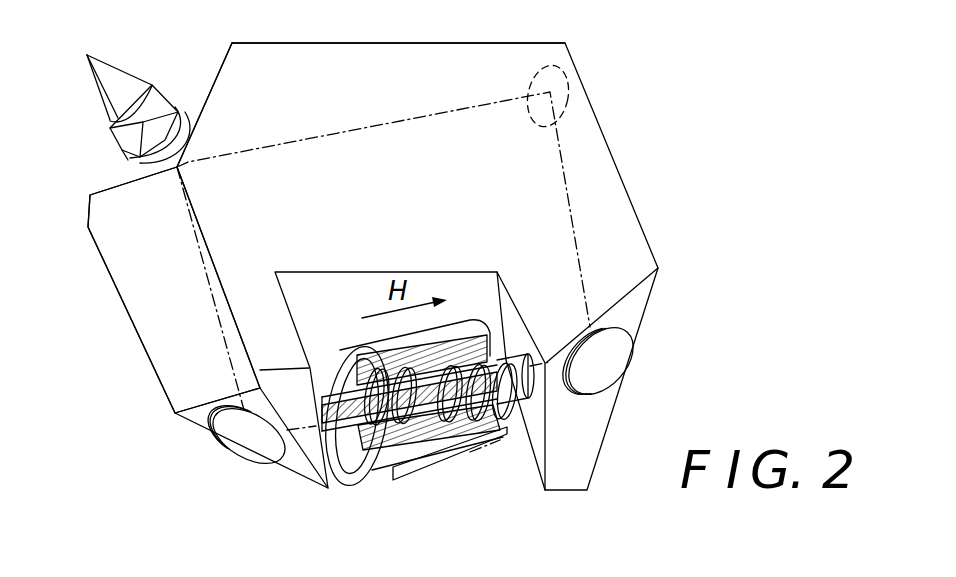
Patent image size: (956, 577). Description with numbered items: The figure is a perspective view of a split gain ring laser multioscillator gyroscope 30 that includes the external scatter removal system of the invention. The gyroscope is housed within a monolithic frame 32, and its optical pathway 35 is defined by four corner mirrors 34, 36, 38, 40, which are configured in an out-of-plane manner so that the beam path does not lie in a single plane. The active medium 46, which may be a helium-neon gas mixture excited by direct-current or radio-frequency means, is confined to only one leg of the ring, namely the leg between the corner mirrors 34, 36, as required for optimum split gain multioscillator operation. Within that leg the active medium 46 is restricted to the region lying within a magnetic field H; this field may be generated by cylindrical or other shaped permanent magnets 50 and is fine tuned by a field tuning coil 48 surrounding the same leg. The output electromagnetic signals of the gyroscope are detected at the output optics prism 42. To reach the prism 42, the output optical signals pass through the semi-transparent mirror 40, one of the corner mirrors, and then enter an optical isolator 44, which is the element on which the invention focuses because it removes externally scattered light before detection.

The split gain ring laser multioscillator gyroscope 30 is at (658, 190).
The monolithic frame 32 is at (145, 325).
The corner mirror 34 is at (615, 360).
The optical pathway 35 is at (428, 112).
The corner mirror 36 is at (238, 440).
The corner mirror 38 is at (565, 78).
The semi-transparent mirror 40 is at (128, 160).
The output optics prism 42 is at (112, 73).
The optical isolator 44 is at (162, 100).
The active medium 46 is at (348, 460).
The field tuning coil 48 is at (423, 452).
The permanent magnets 50 is at (483, 445).